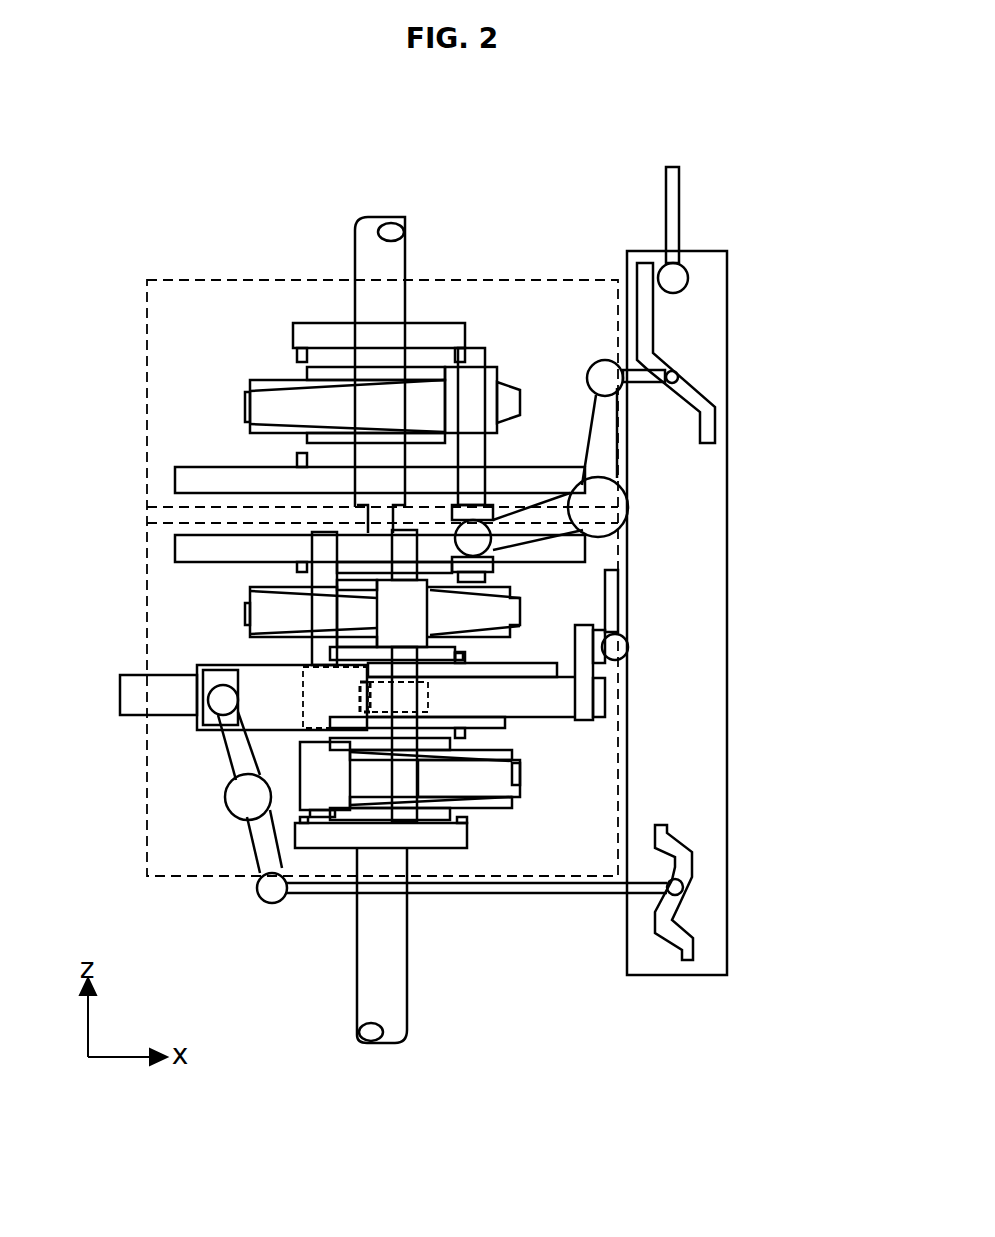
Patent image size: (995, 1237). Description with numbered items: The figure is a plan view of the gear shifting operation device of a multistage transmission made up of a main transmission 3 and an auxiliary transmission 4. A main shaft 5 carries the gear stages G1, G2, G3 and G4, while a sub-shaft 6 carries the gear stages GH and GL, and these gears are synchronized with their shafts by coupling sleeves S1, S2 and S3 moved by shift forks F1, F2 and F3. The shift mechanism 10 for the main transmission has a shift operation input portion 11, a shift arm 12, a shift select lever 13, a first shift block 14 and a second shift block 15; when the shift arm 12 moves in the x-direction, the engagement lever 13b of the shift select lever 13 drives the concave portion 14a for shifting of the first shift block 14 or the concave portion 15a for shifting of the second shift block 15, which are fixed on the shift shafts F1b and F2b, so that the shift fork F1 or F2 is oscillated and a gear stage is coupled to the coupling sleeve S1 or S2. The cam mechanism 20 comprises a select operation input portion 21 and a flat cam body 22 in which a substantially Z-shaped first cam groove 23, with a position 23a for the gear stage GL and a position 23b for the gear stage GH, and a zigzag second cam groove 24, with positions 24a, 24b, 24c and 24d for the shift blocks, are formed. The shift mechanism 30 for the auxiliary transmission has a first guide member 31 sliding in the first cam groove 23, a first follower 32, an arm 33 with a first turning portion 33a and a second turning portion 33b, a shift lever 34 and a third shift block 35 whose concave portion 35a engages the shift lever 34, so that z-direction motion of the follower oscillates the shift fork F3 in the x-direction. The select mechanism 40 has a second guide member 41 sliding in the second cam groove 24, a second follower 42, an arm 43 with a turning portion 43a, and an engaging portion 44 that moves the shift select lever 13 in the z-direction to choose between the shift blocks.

The main transmission 3 is at (215, 867).
The auxiliary transmission 4 is at (228, 303).
The main shaft 5 is at (382, 1010).
The sub-shaft 6 is at (377, 303).
The shift mechanism for main transmission 10 is at (627, 614).
The shift operation input portion 11 is at (612, 598).
The shift arm 12 is at (515, 697).
The shift select lever 13 is at (249, 660).
The engagement lever 13b is at (276, 689).
The first shift block 14 is at (265, 712).
The concave portion for shifting 14a is at (323, 718).
The second shift block 15 is at (284, 669).
The concave portion for shifting 15a is at (415, 703).
The cam mechanism 20 is at (728, 567).
The select operation input portion 21 is at (690, 642).
The cam body 22 is at (676, 278).
The first cam groove 23 is at (738, 353).
The position for gear stage GL 23a is at (652, 322).
The position for gear stage GH 23b is at (704, 427).
The second cam groove 24 is at (707, 910).
The position for first shift block 24a is at (658, 832).
The position for first shift block 24b is at (680, 867).
The position for second shift block 24c is at (672, 920).
The position for second shift block 24d is at (688, 945).
The shift mechanism for auxiliary transmission 30 is at (708, 327).
The first guide member 31 is at (640, 310).
The first follower 32 is at (632, 370).
The arm 33 is at (565, 364).
The first turning portion 33a is at (596, 362).
The second turning portion 33b is at (601, 436).
The shift lever 34 is at (477, 538).
The third shift block 35 is at (421, 387).
The concave portion 35a is at (320, 330).
The select mechanism 40 is at (252, 870).
The second guide member 41 is at (655, 923).
The second follower 42 is at (587, 890).
The arm 43 is at (170, 792).
The turning portion 43a is at (253, 798).
The engaging portion 44 is at (198, 698).
The shift fork F1 is at (565, 861).
The first shift shaft F1b is at (400, 540).
The shift fork F2 is at (307, 570).
The shift shaft F2b is at (317, 552).
The shift fork F3 is at (273, 362).
The gear stage G1 is at (460, 837).
The gear stage G2 is at (487, 722).
The gear stage G3 is at (482, 670).
The gear stage G4 is at (270, 548).
The gear stage GH is at (205, 478).
The gear stage GL is at (305, 330).
The coupling sleeve S1 is at (510, 750).
The coupling sleeve S2 is at (270, 590).
The coupling sleeve S3 is at (270, 388).